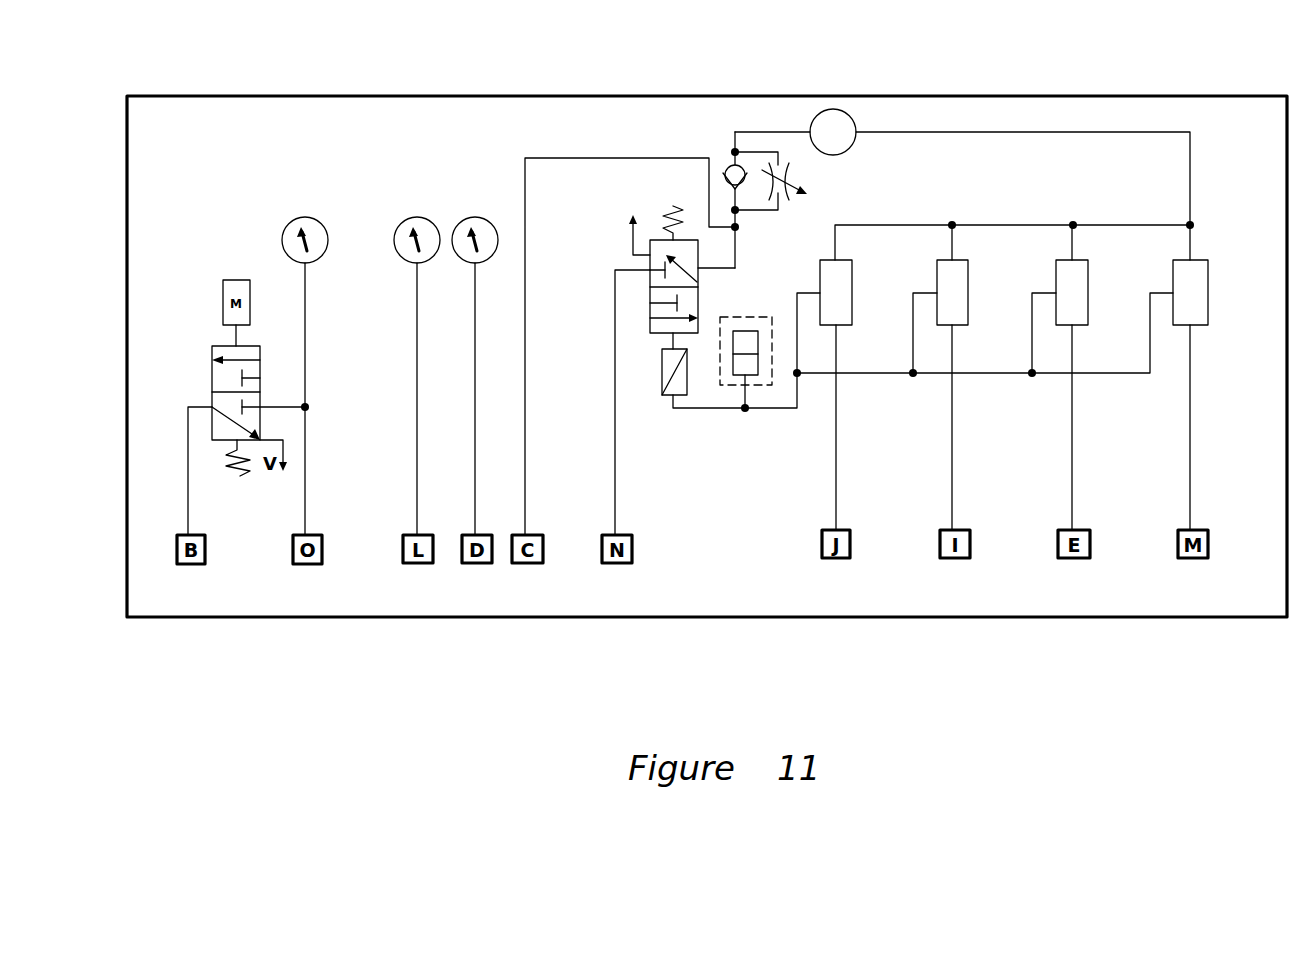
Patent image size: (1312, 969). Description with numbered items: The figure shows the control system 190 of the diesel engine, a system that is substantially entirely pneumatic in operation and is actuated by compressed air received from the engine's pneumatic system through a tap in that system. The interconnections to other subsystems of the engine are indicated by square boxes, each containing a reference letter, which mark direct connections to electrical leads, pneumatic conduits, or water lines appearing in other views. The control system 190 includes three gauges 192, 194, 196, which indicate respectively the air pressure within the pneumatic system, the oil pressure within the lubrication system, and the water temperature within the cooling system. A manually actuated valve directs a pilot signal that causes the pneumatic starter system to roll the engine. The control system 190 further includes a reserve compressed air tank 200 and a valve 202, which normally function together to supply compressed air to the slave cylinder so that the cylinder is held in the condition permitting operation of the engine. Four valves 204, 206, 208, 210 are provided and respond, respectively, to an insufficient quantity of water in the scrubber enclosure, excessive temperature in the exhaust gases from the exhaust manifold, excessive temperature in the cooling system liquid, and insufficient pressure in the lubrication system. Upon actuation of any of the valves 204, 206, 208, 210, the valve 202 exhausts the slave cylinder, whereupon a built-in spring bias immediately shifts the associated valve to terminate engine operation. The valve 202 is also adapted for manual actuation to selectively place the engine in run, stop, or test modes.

The control system 190 is at (238, 84).
The gauge 192 is at (295, 220).
The gauge 194 is at (407, 220).
The gauge 196 is at (472, 218).
The reserve compressed air tank 200 is at (848, 143).
The valve 202 is at (714, 288).
The valve 204 is at (850, 287).
The valve 206 is at (965, 290).
The valve 208 is at (1085, 290).
The valve 210 is at (1201, 290).